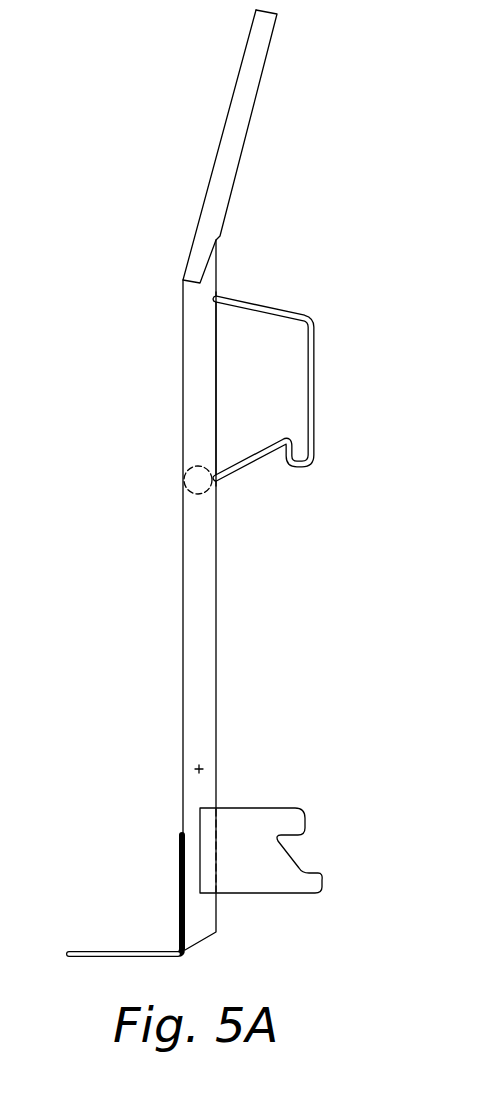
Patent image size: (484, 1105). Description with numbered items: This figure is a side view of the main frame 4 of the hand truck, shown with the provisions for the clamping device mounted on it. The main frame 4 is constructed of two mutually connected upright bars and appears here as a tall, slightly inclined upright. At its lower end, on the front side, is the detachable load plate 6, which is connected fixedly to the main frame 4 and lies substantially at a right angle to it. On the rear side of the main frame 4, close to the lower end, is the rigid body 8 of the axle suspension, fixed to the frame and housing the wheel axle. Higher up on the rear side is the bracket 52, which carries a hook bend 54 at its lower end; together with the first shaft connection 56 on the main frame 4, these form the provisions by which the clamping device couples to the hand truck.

The main frame 4 is at (156, 558).
The load plate 6 is at (95, 951).
The rigid body 8 is at (265, 823).
The bracket 52 is at (312, 392).
The hook bend 54 is at (298, 467).
The first shaft connection 56 is at (196, 769).